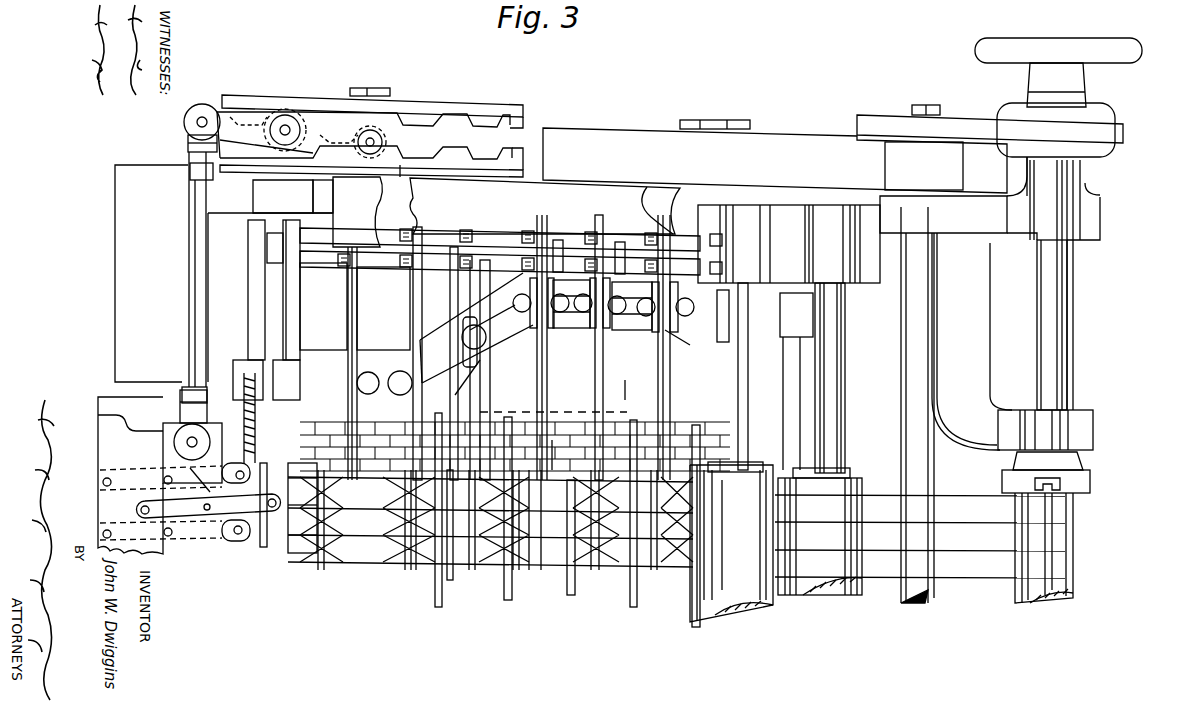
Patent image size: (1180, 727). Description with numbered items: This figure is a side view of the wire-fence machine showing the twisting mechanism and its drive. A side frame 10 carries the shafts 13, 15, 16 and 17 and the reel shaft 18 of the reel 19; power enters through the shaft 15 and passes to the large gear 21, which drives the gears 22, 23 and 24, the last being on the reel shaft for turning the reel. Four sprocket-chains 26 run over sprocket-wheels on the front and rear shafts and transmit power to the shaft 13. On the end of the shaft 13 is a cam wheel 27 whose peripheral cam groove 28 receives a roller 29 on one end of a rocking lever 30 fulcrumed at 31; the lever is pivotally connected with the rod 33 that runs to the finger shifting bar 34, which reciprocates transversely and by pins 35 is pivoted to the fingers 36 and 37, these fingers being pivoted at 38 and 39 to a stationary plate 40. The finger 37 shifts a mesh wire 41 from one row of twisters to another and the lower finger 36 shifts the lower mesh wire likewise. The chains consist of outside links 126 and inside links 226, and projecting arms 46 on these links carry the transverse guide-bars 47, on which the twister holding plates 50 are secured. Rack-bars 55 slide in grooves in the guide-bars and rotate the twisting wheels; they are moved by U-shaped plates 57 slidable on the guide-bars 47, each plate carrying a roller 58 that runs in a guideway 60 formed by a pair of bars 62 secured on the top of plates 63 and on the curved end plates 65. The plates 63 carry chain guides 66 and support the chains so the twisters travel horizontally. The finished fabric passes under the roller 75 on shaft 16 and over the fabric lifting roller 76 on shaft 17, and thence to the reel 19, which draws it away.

The side frame 10 is at (506, 212).
The shaft 13 is at (622, 405).
The shaft 15 is at (926, 587).
The shaft 16 is at (733, 358).
The shaft 17 is at (845, 312).
The reel shaft 18 is at (1007, 480).
The reel 19 is at (1065, 568).
The large gear 21 is at (810, 142).
The gear 22 is at (947, 177).
The gear 23 is at (963, 125).
The gear 24 is at (1068, 97).
The sprocket-chain 26 is at (552, 440).
The cam wheel 27 is at (270, 98).
The cam groove 28 is at (508, 130).
The roller 29 is at (393, 127).
The rocking lever 30 is at (325, 120).
The fulcrum 31 is at (287, 128).
The rod 33 is at (193, 241).
The finger shifting bar 34 is at (115, 415).
The pin 35 is at (168, 468).
The lower finger 36 is at (113, 473).
The finger 37 is at (209, 506).
The pivot 38 is at (102, 481).
The pivot 39 is at (140, 508).
The stationary plate 40 is at (100, 442).
The mesh wire 41 is at (200, 480).
The projecting arm 46 is at (475, 232).
The guide-bar 47 is at (252, 290).
The twister holding plate 50 is at (582, 600).
The rack-bar 55 is at (243, 376).
The U-shaped plate 57 is at (530, 288).
The roller 58 is at (564, 323).
The guideway 60 is at (395, 350).
The bar 62 is at (447, 318).
The plate 63 is at (624, 389).
The curved end plate 65 is at (323, 306).
The chain guide 66 is at (490, 520).
The roller 75 is at (772, 613).
The fabric lifting roller 76 is at (863, 477).
The outside link 126 is at (620, 267).
The inside link 226 is at (555, 250).